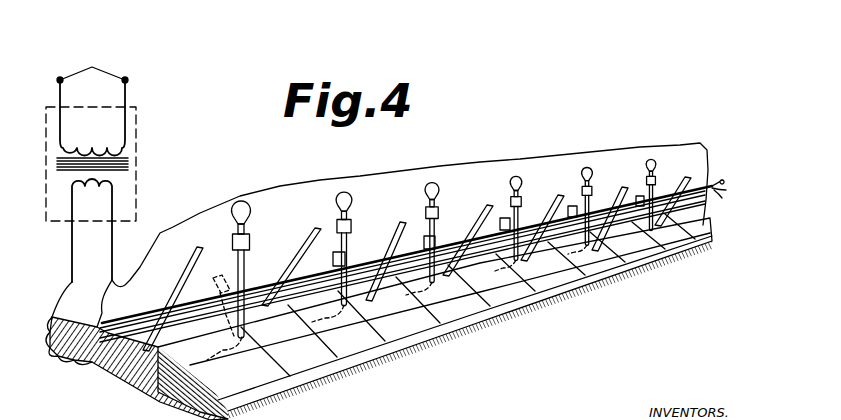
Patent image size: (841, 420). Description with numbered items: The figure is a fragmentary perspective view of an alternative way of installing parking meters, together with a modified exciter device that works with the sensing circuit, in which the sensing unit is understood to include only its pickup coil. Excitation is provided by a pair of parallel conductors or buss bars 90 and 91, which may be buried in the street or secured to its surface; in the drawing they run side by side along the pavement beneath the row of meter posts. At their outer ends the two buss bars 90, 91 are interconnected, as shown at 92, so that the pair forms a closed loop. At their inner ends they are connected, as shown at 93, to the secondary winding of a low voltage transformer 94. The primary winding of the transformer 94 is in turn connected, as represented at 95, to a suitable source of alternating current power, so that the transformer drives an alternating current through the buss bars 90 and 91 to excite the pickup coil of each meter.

The buss bar 90 is at (122, 323).
The buss bar 91 is at (173, 330).
The outer-end interconnection 92 is at (725, 180).
The inner-end connection 93 is at (72, 241).
The low voltage transformer 94 is at (136, 167).
The primary winding connection 95 is at (92, 66).